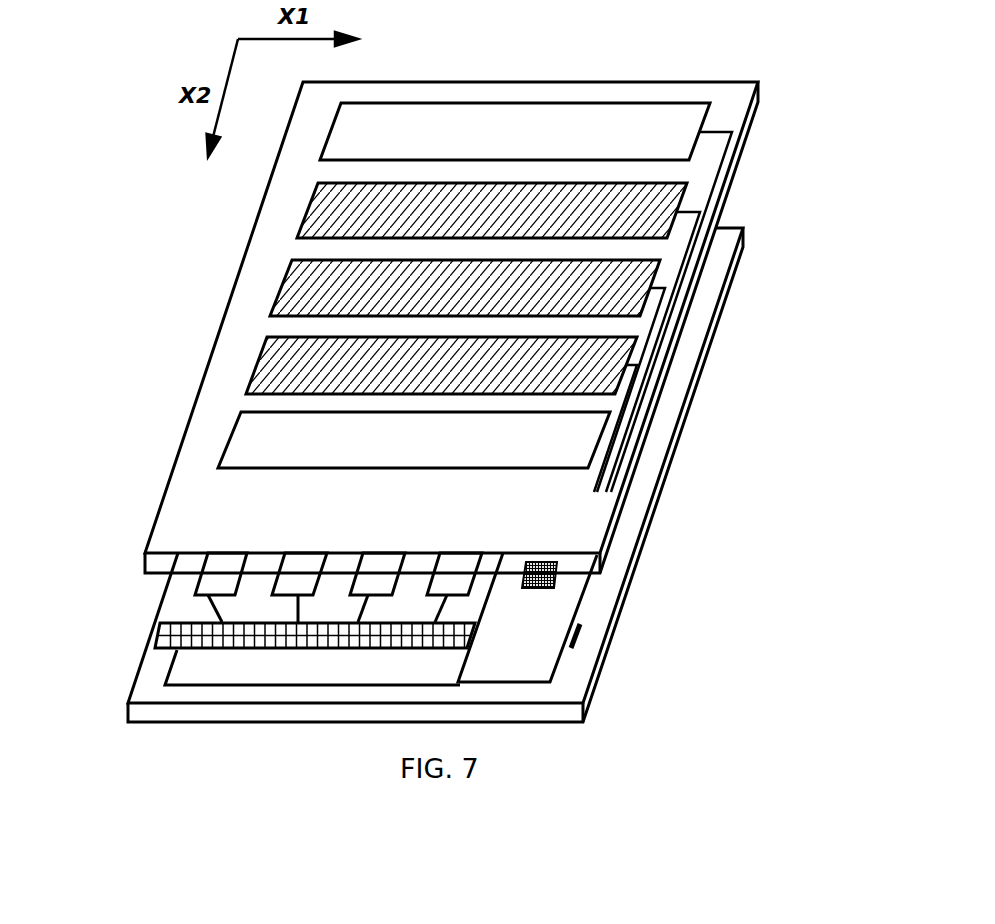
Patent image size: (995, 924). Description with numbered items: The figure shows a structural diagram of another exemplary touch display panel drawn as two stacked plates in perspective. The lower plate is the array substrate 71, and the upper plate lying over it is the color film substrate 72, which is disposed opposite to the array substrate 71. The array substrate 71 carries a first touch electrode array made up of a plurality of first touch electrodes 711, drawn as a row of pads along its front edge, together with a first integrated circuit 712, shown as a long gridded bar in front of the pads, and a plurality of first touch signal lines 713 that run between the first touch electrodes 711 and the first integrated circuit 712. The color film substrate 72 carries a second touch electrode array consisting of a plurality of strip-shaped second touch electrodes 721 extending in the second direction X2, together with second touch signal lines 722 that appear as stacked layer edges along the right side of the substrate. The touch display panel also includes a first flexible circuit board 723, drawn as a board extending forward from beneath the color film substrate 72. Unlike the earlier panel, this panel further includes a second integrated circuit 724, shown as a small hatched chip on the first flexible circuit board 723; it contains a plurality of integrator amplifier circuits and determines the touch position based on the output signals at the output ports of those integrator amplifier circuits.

The array substrate 71 is at (707, 347).
The color film substrate 72 is at (747, 135).
The second touch electrodes 721 is at (495, 117).
The second touch signal lines 722 is at (706, 222).
The first flexible circuit board 723 is at (542, 657).
The second integrated circuit 724 is at (557, 573).
The first touch electrodes 711 is at (213, 583).
The first integrated circuit 712 is at (158, 633).
The first touch signal lines 713 is at (215, 608).